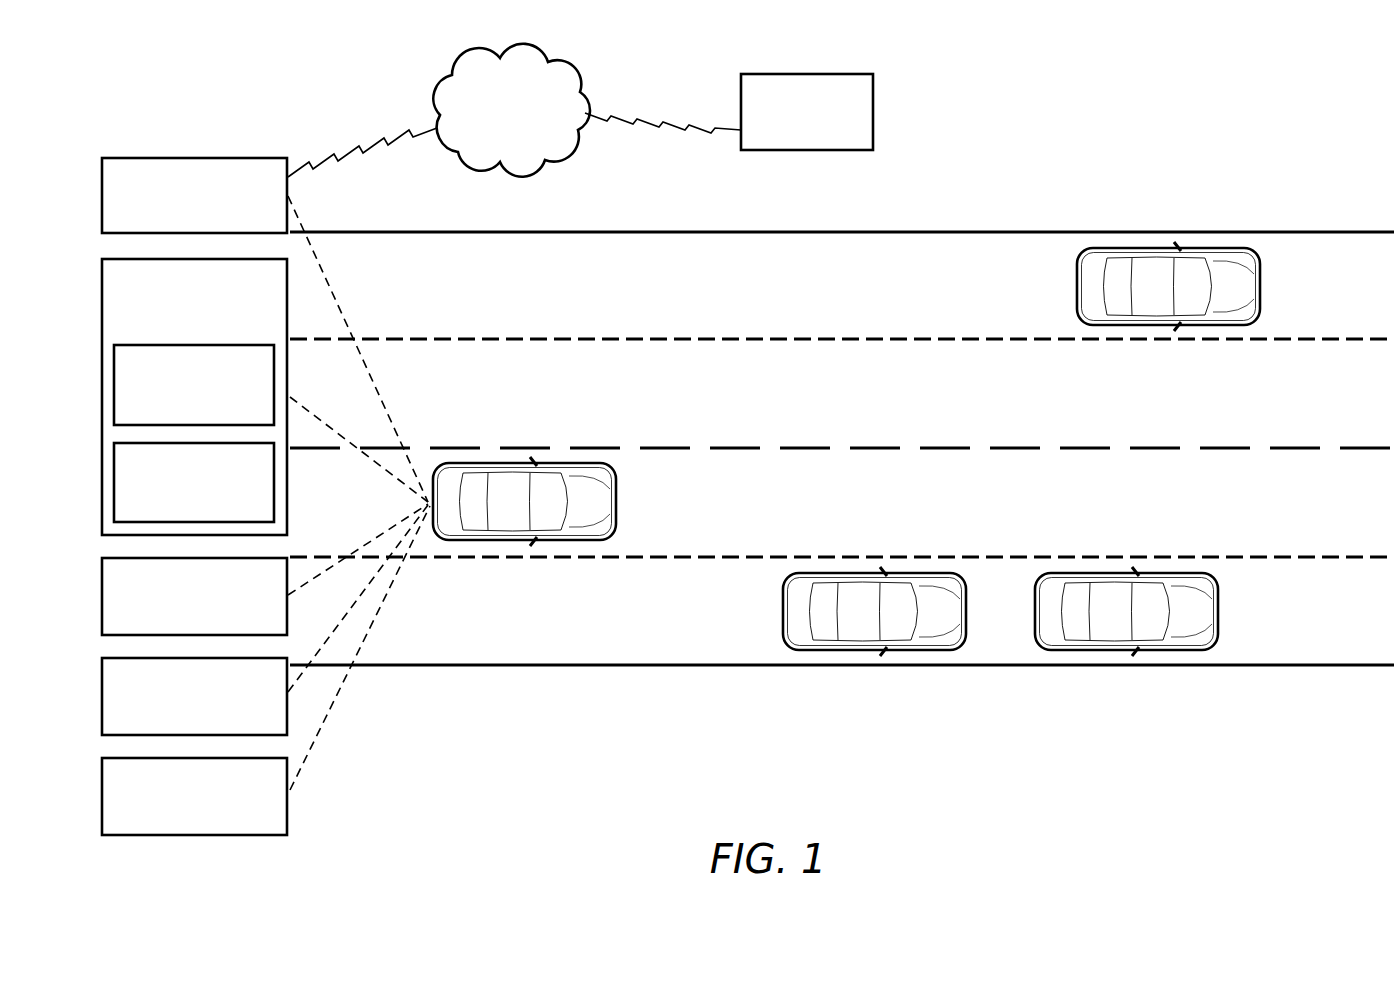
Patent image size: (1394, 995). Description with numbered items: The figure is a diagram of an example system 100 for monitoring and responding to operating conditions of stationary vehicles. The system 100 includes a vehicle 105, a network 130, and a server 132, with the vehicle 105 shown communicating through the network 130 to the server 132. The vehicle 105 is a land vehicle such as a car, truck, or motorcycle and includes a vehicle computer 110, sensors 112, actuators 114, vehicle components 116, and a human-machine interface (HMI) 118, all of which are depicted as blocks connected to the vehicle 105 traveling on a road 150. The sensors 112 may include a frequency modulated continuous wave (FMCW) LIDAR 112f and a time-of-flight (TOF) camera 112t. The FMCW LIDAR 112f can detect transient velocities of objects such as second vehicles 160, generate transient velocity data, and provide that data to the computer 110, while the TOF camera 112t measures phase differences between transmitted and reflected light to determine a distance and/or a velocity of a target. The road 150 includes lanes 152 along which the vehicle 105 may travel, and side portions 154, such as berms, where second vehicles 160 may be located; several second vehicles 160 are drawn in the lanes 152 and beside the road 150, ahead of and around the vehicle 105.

The system 100 is at (1294, 133).
The vehicle 105 is at (617, 500).
The vehicle computer 110 is at (186, 220).
The sensors 112 is at (186, 320).
The frequency modulated continuous wave (FMCW) LIDAR 112f is at (184, 407).
The time-of-flight (TOF) camera 112t is at (184, 507).
The actuators 114 is at (186, 622).
The vehicle components 116 is at (186, 722).
The human-machine interface (HMI) 118 is at (186, 824).
The network 130 is at (502, 139).
The server 132 is at (799, 139).
The road 150 is at (1304, 518).
The lanes 152 is at (780, 495).
The side portions 154 is at (962, 262).
The second vehicles 160 is at (1197, 250).